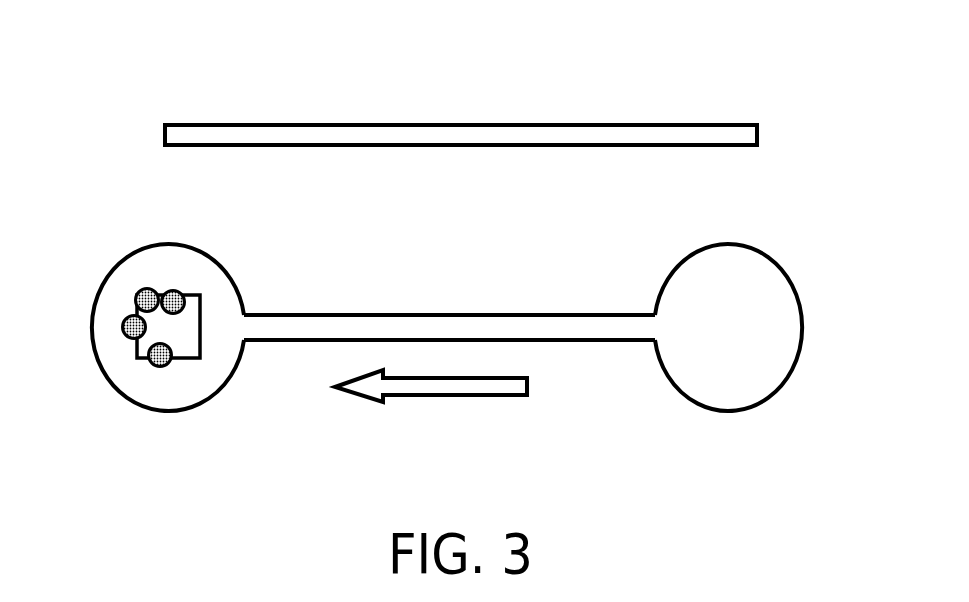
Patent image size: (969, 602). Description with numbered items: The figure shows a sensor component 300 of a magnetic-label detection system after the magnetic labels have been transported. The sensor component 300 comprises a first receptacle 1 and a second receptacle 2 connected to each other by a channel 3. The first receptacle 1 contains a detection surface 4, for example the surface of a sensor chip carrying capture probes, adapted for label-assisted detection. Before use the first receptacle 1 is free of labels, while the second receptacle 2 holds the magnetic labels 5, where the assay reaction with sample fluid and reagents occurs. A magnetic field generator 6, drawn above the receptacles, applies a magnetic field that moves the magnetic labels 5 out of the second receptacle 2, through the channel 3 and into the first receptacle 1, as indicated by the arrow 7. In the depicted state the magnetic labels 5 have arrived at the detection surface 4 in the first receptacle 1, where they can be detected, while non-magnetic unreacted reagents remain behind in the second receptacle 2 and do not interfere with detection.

The sensor component 300 is at (763, 75).
The first receptacle 1 is at (92, 327).
The second receptacle 2 is at (803, 327).
The channel 3 is at (448, 313).
The detection surface 4 is at (190, 342).
The magnetic label 5 is at (158, 366).
The magnetic field generator 6 is at (507, 145).
The arrow 7 is at (455, 397).